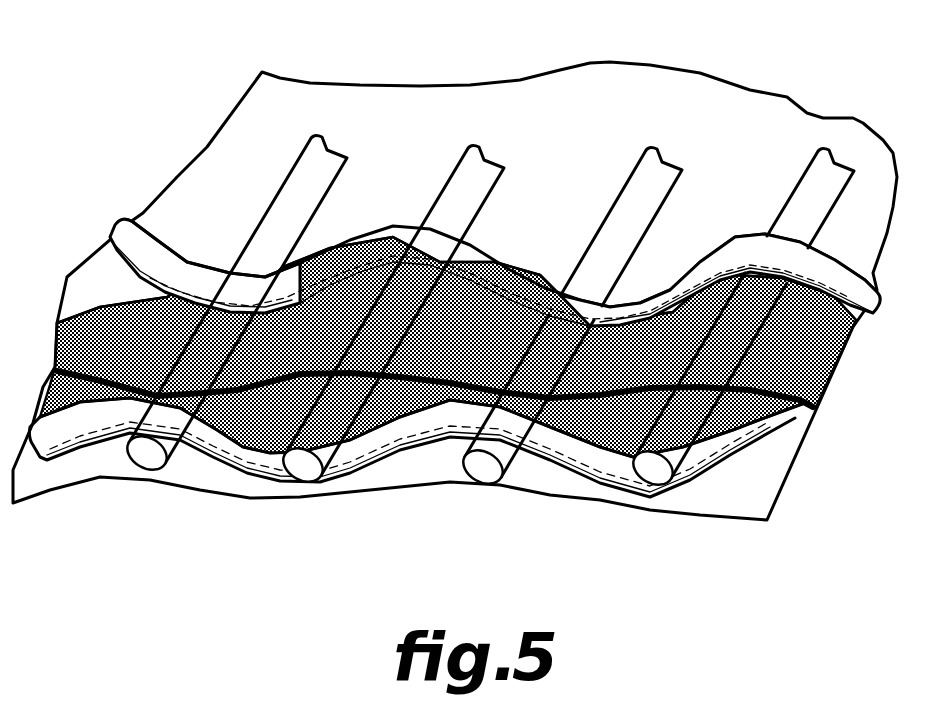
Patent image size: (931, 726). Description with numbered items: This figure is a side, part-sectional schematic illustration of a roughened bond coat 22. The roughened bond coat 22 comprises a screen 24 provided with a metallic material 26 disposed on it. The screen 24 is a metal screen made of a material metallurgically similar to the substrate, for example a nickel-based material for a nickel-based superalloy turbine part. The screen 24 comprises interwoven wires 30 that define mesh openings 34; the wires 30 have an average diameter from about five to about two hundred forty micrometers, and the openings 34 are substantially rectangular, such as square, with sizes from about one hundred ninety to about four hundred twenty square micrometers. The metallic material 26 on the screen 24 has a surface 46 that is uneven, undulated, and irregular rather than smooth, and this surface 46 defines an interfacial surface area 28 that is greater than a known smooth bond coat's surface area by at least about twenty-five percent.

The roughened bond coat 22 is at (838, 460).
The screen 24 is at (186, 107).
The metallic material 26 is at (93, 323).
The interfacial surface area 28 is at (453, 330).
The wires 30 is at (170, 272).
The mesh openings 34 is at (97, 298).
The surface 46 is at (780, 388).